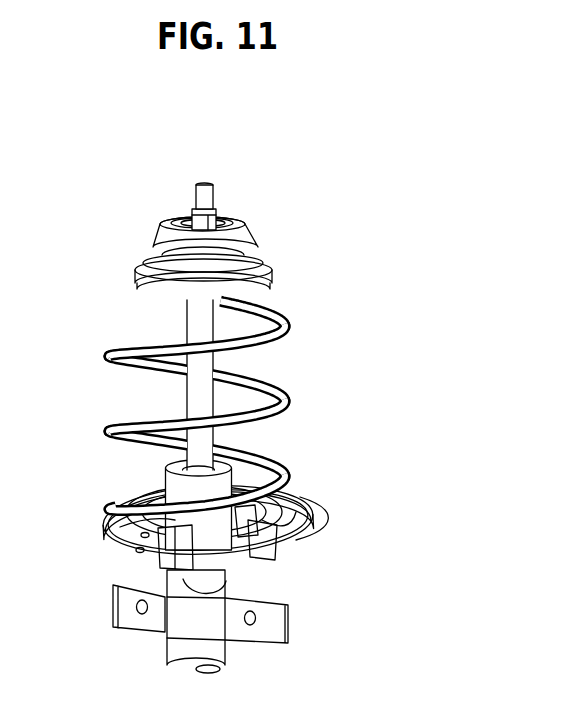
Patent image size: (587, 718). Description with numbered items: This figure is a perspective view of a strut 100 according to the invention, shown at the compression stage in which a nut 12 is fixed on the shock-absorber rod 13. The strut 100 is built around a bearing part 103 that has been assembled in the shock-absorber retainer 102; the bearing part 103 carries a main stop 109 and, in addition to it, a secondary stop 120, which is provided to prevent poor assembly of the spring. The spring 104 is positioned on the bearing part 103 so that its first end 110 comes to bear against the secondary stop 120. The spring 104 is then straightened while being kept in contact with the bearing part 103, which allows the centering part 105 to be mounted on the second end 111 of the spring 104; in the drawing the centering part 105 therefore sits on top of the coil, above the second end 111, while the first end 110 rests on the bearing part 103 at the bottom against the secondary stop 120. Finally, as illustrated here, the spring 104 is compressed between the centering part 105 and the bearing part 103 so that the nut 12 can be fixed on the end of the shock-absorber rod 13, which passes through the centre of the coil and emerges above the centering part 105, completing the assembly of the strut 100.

The strut 100 is at (380, 273).
The nut 12 is at (232, 222).
The centering part 105 is at (162, 237).
The second end of the spring 111 is at (155, 296).
The spring 104 is at (253, 342).
The shock-absorber rod 13 is at (187, 412).
The shock-absorber retainer 102 is at (105, 523).
The bearing part 103 is at (315, 512).
The main stop 109 is at (130, 550).
The first end of the spring 110 is at (275, 557).
The secondary stop 120 is at (228, 584).